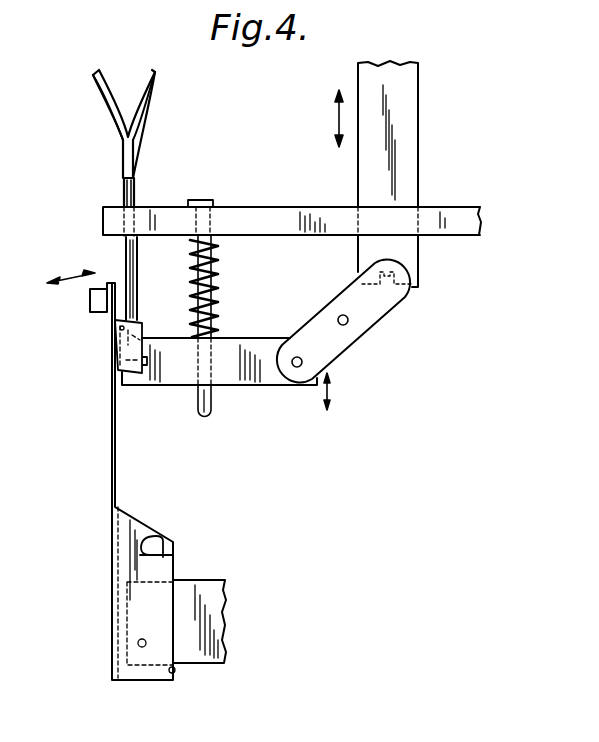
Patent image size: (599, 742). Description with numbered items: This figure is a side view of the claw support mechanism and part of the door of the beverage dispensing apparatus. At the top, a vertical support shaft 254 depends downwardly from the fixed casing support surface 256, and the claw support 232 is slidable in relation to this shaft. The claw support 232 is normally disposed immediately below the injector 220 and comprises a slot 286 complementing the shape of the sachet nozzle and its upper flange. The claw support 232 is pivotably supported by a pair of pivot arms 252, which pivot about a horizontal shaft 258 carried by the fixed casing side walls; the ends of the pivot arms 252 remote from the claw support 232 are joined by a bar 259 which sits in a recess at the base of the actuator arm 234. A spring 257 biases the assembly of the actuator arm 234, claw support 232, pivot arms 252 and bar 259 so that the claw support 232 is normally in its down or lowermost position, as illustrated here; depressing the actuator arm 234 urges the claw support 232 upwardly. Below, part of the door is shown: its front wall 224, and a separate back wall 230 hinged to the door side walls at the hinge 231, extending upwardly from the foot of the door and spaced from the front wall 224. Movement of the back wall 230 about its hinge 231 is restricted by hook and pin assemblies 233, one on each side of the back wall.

The injector 220 is at (127, 263).
The front wall 224 is at (110, 542).
The back wall 230 is at (175, 567).
The hinge 231 is at (177, 672).
The claw support 232 is at (261, 372).
The hook and pin assemblies 233 is at (143, 556).
The actuator arm 234 is at (404, 142).
The pivot arms 252 is at (312, 332).
The vertical support shaft 254 is at (215, 265).
The fixed casing support surface 256 is at (331, 216).
The spring 257 is at (197, 291).
The horizontal shaft 258 is at (339, 315).
The bar 259 is at (396, 286).
The slot 286 is at (118, 366).